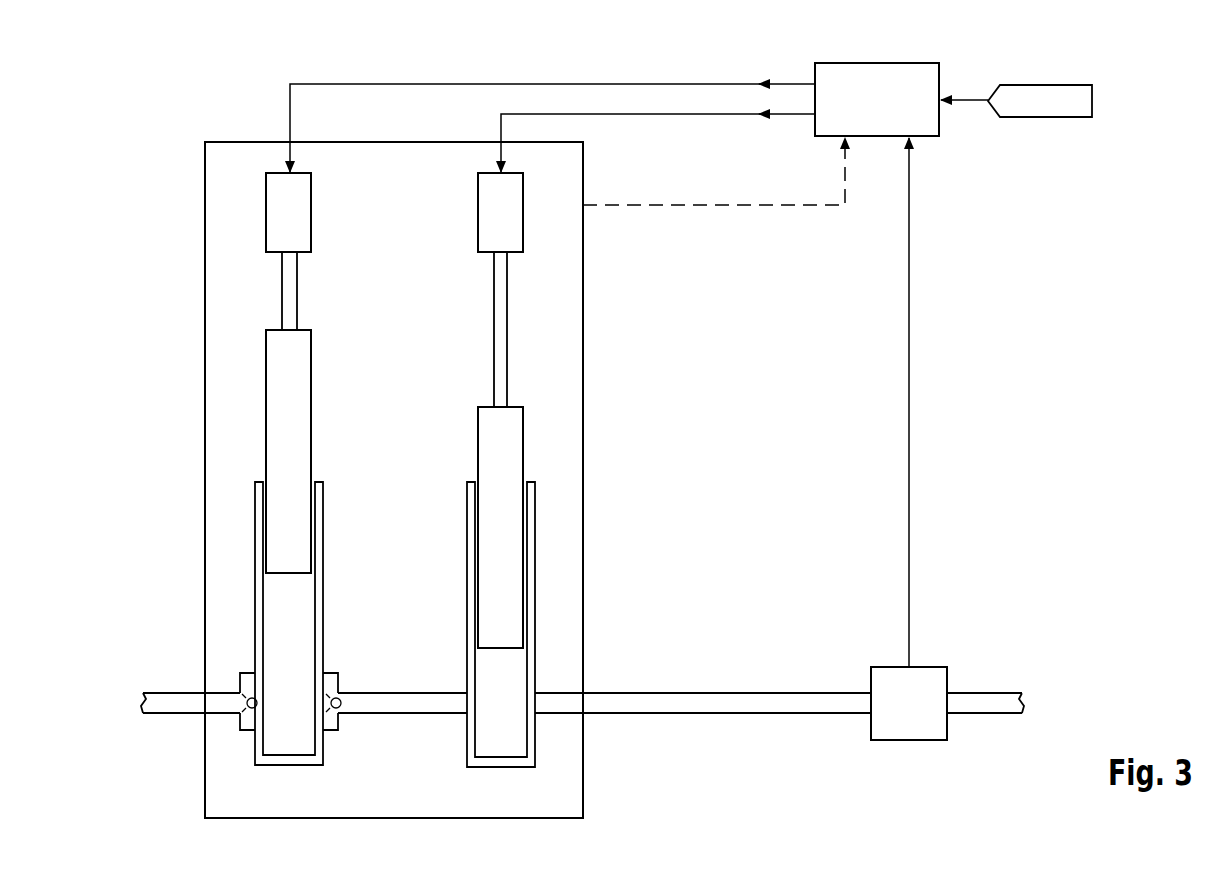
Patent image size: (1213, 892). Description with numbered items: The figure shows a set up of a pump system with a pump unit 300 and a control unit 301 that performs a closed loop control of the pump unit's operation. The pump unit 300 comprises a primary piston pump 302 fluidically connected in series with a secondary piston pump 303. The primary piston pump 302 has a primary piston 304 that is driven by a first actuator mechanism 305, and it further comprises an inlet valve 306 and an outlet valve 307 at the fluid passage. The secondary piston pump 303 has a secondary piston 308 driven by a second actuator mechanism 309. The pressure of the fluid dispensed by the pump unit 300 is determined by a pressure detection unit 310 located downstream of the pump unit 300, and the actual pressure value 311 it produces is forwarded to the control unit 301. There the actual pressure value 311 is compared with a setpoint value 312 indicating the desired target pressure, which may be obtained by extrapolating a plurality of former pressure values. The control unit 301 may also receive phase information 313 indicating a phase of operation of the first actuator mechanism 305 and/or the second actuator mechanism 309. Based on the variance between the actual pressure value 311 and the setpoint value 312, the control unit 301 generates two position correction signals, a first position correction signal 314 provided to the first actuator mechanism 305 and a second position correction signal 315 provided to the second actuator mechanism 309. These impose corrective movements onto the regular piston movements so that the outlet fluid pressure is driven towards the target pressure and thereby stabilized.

The pump unit 300 is at (583, 792).
The control unit 301 is at (878, 73).
The primary piston pump 302 is at (336, 614).
The secondary piston pump 303 is at (460, 545).
The primary piston 304 is at (297, 368).
The first actuator mechanism 305 is at (297, 208).
The inlet valve 306 is at (248, 722).
The outlet valve 307 is at (330, 722).
The secondary piston 308 is at (492, 432).
The second actuator mechanism 309 is at (492, 208).
The pressure detection unit 310 is at (909, 727).
The actual pressure value 311 is at (910, 409).
The setpoint value 312 is at (1045, 93).
The phase information 313 is at (705, 208).
The first position correction signal 314 is at (400, 84).
The second position correction signal 315 is at (662, 117).